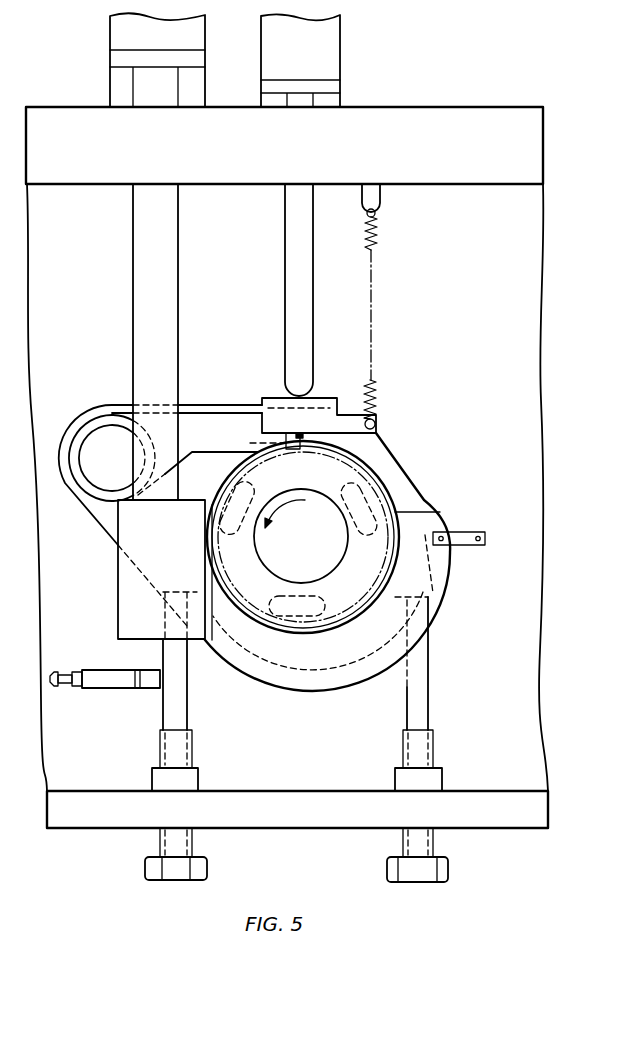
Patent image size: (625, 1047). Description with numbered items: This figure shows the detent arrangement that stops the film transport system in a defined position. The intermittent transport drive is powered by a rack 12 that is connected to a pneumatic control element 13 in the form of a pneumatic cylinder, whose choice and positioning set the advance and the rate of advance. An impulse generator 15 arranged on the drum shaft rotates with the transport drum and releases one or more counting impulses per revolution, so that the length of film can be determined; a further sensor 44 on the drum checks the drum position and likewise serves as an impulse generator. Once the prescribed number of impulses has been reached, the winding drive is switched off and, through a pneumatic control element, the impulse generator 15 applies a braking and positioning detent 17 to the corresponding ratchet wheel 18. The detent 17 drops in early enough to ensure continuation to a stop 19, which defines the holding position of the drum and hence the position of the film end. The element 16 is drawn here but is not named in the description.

The rack 12 is at (127, 621).
The pneumatic control element 13 is at (118, 75).
The impulse generator 15 is at (428, 557).
The guide block 16 is at (332, 58).
The braking and positioning detent 17 is at (278, 396).
The ratchet wheel 18 is at (327, 470).
The stop 19 is at (306, 438).
The sensor 44 is at (467, 532).